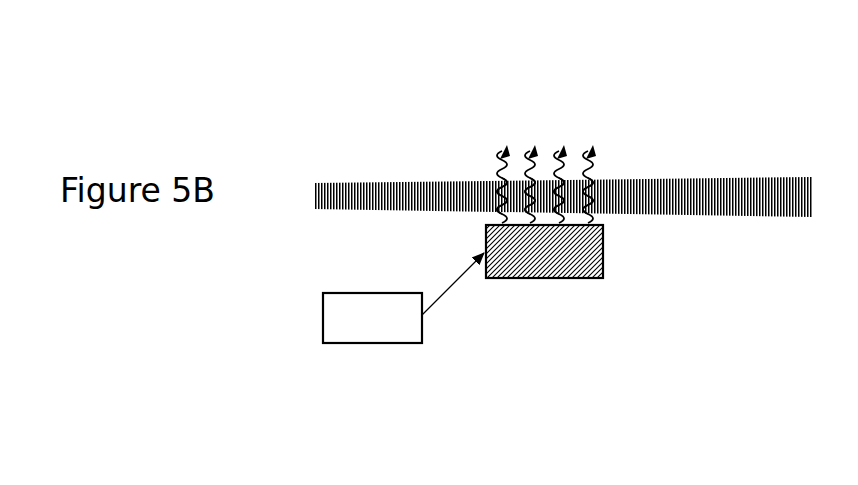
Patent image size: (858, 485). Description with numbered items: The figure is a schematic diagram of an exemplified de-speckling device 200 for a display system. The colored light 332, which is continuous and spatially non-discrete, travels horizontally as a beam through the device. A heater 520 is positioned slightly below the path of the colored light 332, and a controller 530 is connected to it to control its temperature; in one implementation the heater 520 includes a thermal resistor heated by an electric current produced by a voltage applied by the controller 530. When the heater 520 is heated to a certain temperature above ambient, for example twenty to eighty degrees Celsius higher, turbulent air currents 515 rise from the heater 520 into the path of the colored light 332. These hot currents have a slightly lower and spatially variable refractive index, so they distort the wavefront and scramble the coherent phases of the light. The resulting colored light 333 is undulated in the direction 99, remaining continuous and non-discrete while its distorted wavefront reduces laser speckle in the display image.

The de-speckling device 200 is at (582, 78).
The direction 99 is at (773, 117).
The colored light 332 is at (366, 212).
The colored light 333 is at (760, 217).
The turbulent air currents 515 is at (595, 156).
The heater 520 is at (590, 255).
The controller 530 is at (392, 330).